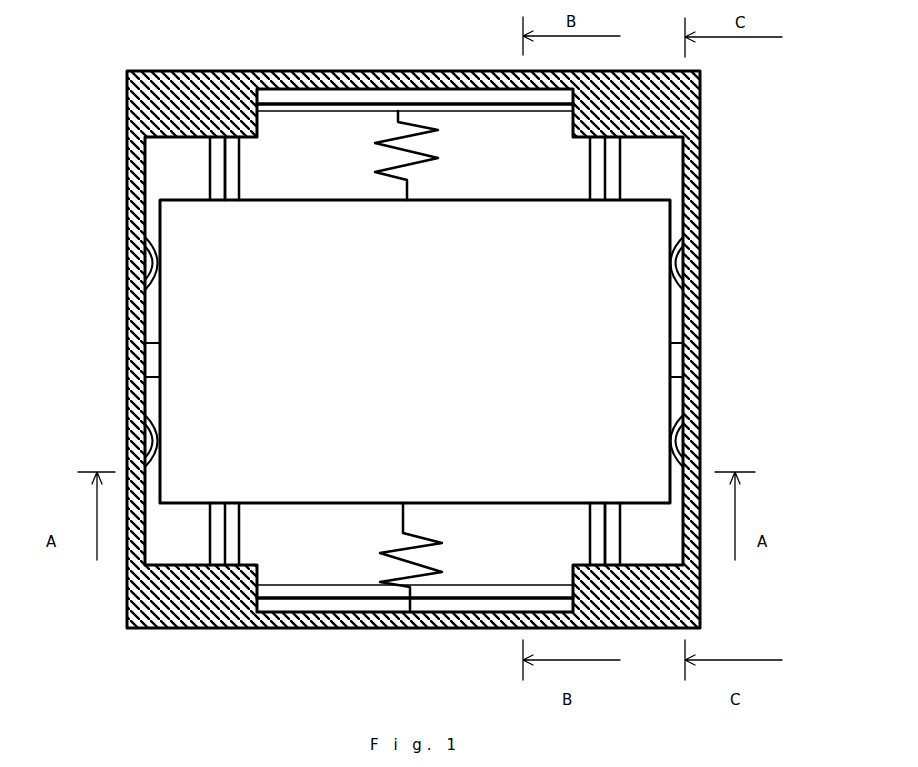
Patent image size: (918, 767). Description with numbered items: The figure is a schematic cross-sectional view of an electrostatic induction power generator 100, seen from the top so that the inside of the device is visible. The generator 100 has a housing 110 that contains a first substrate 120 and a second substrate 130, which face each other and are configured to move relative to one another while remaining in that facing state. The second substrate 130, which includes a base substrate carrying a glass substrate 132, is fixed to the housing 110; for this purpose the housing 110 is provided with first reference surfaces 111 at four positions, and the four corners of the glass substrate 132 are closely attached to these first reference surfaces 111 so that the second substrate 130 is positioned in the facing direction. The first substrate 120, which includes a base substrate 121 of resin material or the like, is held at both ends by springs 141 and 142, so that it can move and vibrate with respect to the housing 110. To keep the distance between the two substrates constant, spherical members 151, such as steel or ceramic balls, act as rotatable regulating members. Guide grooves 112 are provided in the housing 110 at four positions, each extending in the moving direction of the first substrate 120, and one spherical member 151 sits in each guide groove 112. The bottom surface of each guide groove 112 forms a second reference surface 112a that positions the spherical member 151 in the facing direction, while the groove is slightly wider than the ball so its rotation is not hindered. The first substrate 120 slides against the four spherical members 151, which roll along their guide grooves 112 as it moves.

The electrostatic induction power generator 100 is at (367, 320).
The housing 110 is at (127, 152).
The first reference surface 111 is at (268, 128).
The guide groove 112 is at (169, 168).
The second reference surface 112a is at (165, 184).
The first substrate 120 is at (351, 161).
The base substrate 121 is at (683, 323).
The second substrate 130 is at (323, 603).
The glass substrate 132 is at (272, 590).
The spring 141 is at (398, 110).
The spring 142 is at (383, 572).
The spherical member 151 is at (127, 283).